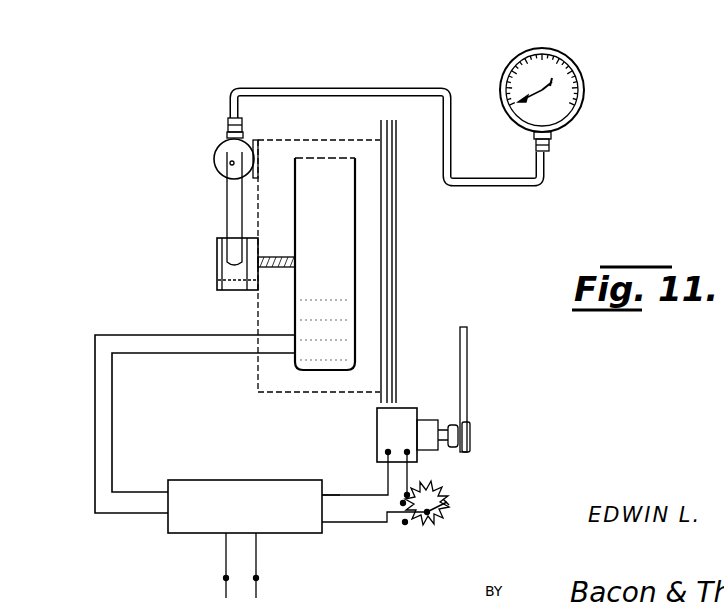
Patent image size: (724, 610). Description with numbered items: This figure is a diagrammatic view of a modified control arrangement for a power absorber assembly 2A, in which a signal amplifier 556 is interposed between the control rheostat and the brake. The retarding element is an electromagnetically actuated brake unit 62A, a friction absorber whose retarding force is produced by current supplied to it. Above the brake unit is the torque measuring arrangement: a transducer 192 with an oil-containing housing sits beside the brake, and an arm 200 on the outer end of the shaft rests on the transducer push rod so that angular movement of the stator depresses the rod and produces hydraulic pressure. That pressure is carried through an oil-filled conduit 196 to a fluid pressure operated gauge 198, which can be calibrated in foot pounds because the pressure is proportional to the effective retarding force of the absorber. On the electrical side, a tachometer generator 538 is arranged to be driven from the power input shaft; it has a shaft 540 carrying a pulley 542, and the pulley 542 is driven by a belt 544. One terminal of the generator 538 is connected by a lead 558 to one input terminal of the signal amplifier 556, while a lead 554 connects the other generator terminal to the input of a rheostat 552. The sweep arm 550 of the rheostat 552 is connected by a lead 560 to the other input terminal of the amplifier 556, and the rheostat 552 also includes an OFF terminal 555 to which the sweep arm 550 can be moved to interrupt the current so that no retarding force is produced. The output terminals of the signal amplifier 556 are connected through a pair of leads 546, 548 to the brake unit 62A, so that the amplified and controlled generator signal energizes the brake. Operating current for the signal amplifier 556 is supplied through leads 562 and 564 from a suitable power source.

The conduit 196 is at (282, 92).
The fluid pressure operated gauge 198 is at (562, 54).
The transducer 192 is at (213, 149).
The arm 200 is at (232, 205).
The electromagnetically actuated brake unit 62A is at (327, 173).
The power absorber assembly 2A is at (399, 243).
The belt 544 is at (461, 327).
The shaft 540 is at (471, 422).
The pulley 542 is at (471, 438).
The tachometer generator 538 is at (405, 408).
The lead 554 is at (412, 460).
The signal amplifier 556 is at (238, 480).
The lead 548 is at (95, 418).
The lead 546 is at (112, 380).
The lead 558 is at (340, 494).
The lead 560 is at (357, 523).
The OFF terminal 555 is at (403, 503).
The rheostat 552 is at (405, 522).
The sweep arm 550 is at (450, 506).
The lead 562 is at (226, 571).
The lead 564 is at (258, 546).